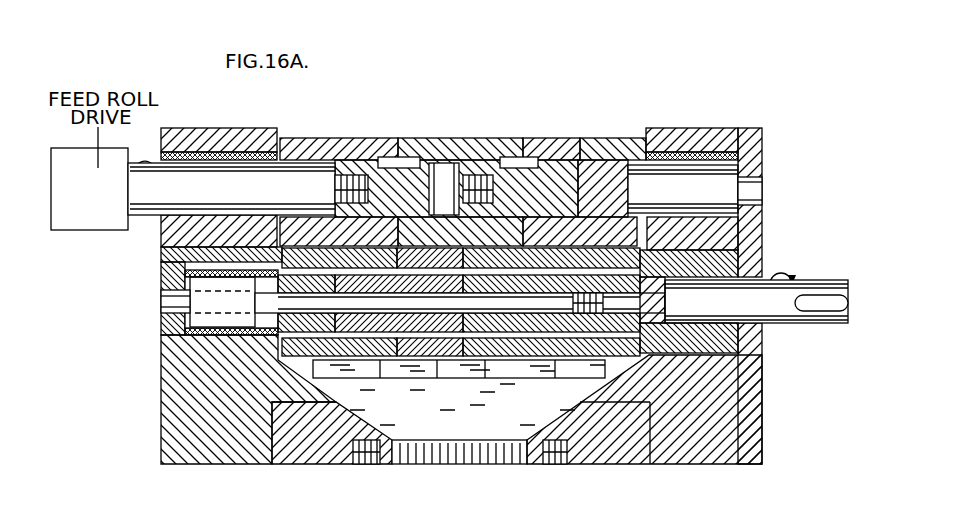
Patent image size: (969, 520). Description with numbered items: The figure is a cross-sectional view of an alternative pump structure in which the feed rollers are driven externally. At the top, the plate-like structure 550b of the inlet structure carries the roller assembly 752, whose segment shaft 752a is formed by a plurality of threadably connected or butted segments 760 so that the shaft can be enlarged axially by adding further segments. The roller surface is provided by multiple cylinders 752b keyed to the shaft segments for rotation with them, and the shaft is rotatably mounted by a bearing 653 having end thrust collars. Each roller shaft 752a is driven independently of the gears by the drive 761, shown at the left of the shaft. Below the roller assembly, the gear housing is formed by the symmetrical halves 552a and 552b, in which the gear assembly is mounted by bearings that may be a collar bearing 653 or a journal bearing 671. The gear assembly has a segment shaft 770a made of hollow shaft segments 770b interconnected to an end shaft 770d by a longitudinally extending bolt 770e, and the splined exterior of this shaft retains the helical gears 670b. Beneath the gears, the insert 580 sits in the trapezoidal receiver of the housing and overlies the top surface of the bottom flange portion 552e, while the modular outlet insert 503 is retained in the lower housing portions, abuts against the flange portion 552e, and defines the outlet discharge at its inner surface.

The drive 761 is at (108, 204).
The bearing 653 is at (218, 150).
The roller assembly 752 is at (463, 135).
The cylinders 752b is at (336, 145).
The segments 760 is at (263, 204).
The plate-like structure 550b is at (742, 145).
The segment shaft 752a is at (716, 188).
The housing half 552a is at (762, 258).
The housing half 552b is at (168, 416).
The longitudinally extending bolt 770e is at (178, 303).
The segment shaft 770a is at (212, 316).
The hollow shaft segments 770b is at (377, 320).
The end shaft 770d is at (813, 319).
The journal bearing 671 is at (725, 345).
The helical gears 670b is at (378, 345).
The bottom flange portion 552e is at (425, 393).
The insert 580 is at (512, 373).
The modular outlet insert 503 is at (612, 448).